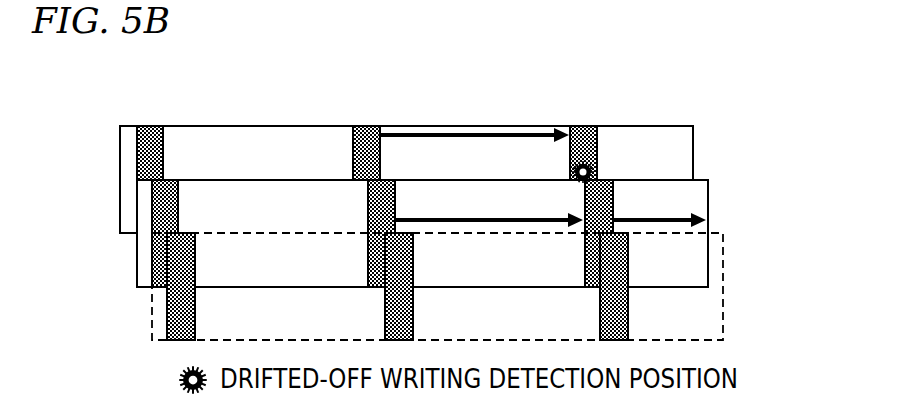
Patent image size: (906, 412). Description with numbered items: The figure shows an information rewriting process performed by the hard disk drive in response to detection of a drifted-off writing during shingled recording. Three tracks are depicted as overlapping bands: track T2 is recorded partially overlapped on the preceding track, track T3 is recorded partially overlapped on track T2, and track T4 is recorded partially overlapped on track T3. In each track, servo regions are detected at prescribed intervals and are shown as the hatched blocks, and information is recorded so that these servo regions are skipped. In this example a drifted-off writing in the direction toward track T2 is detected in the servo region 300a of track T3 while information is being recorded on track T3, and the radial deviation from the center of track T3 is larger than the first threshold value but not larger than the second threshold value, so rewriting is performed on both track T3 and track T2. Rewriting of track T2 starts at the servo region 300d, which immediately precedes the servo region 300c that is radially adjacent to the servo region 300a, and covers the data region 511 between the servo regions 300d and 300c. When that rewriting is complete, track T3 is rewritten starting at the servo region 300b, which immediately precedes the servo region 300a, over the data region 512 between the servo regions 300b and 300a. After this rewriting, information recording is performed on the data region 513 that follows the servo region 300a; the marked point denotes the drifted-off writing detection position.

The track T2 is at (130, 168).
The track T3 is at (142, 220).
The track T4 is at (153, 327).
The servo region 300a is at (612, 188).
The servo region 300b is at (368, 185).
The servo region 300c is at (593, 135).
The servo region 300d is at (358, 137).
The data region 511 is at (413, 132).
The data region 512 is at (410, 190).
The data region 513 is at (695, 188).